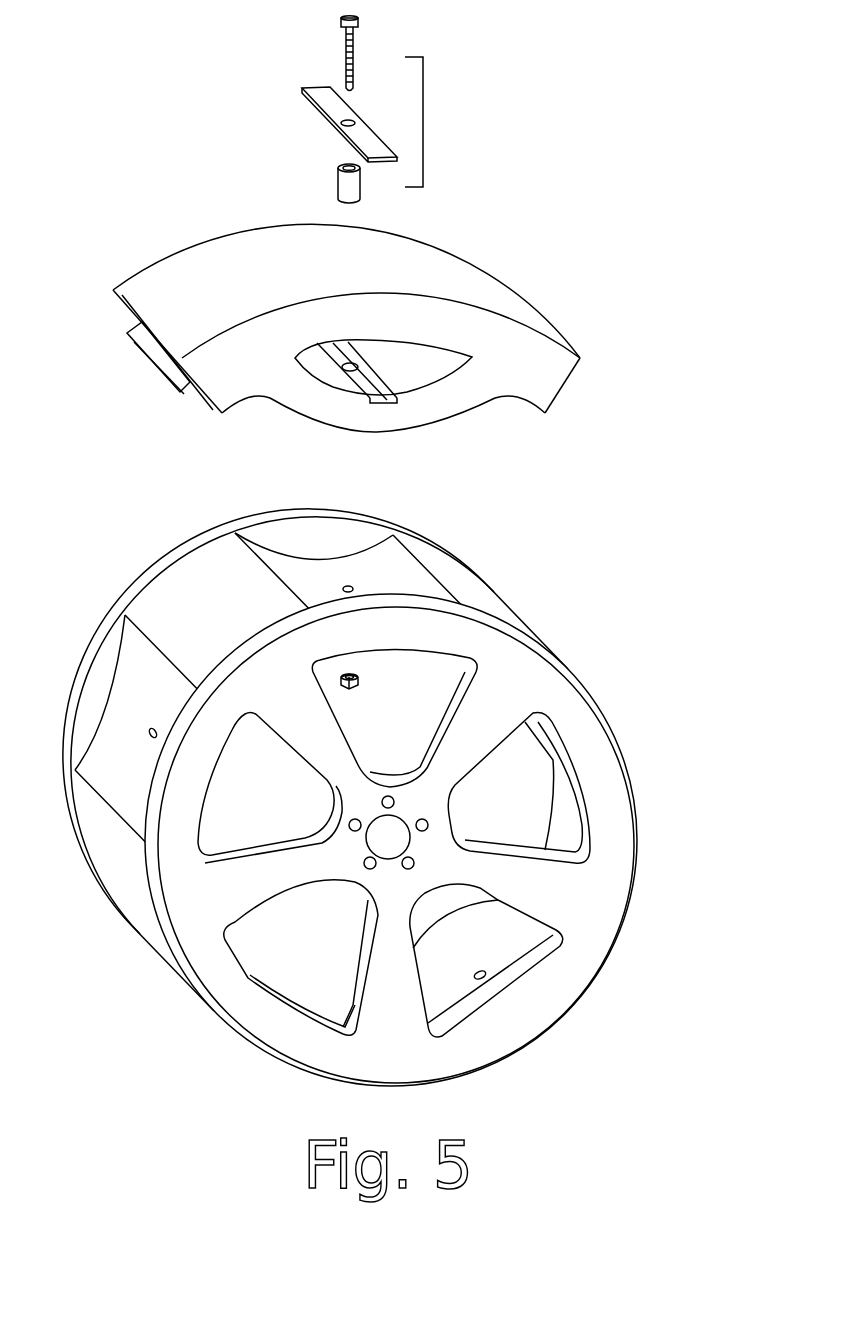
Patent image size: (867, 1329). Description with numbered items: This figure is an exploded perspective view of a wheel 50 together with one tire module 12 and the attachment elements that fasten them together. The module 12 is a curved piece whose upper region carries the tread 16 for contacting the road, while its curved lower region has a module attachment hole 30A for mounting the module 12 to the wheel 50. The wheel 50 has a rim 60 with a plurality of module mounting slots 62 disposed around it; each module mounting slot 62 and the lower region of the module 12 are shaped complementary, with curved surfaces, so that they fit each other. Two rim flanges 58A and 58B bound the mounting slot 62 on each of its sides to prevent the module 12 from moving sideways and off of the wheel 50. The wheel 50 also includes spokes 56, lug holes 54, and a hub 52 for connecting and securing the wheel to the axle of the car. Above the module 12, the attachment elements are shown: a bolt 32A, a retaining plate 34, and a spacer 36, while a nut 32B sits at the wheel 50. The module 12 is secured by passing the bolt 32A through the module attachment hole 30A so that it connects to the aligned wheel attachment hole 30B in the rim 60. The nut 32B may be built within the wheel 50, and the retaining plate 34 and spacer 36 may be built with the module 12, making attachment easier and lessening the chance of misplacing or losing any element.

The module 12 is at (452, 267).
The tread 16 is at (186, 302).
The module attachment hole 30A is at (350, 367).
The wheel attachment hole 30B is at (347, 585).
The bolt 32A is at (342, 57).
The nut 32B is at (357, 685).
The retaining plate 34 is at (337, 127).
The spacer 36 is at (333, 183).
The wheel 50 is at (389, 761).
The hub 52 is at (412, 814).
The lug holes 54 is at (368, 870).
The spokes 56 is at (310, 735).
The rim flange 58A is at (360, 520).
The rim flange 58B is at (430, 602).
The rim 60 is at (274, 646).
The module mounting slot 62 is at (305, 575).